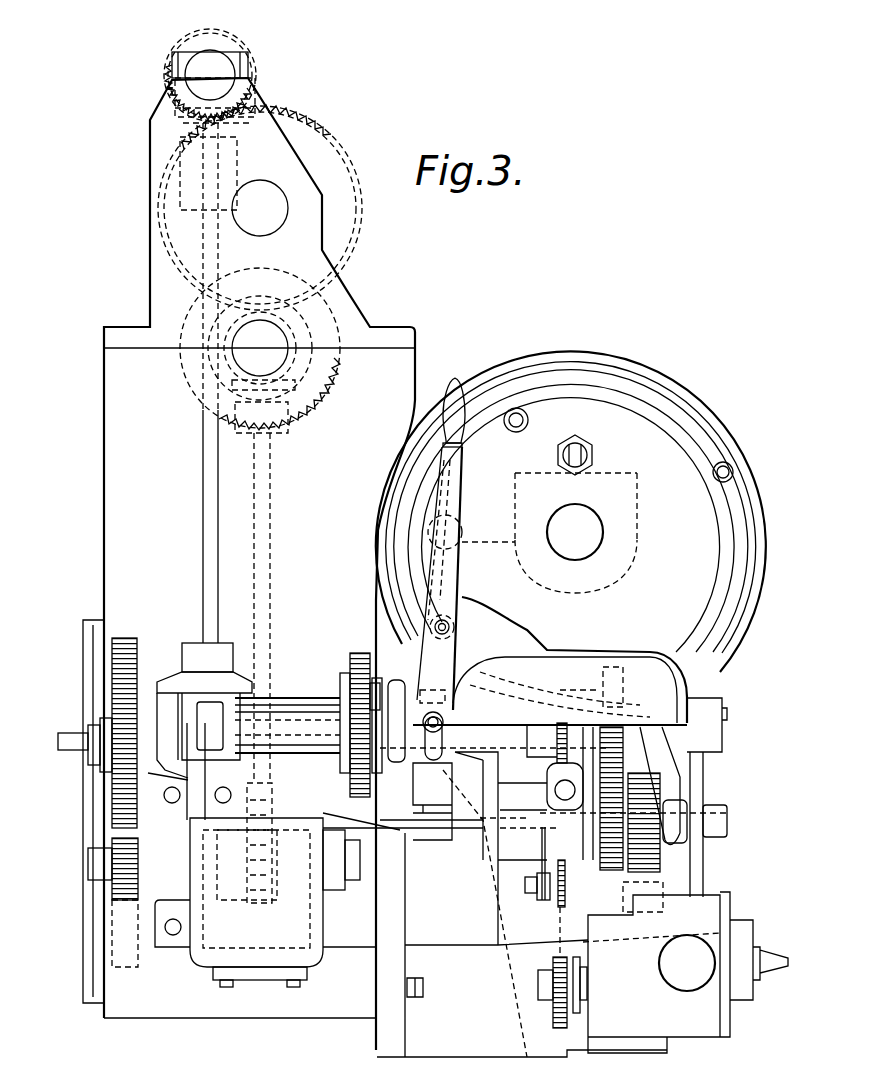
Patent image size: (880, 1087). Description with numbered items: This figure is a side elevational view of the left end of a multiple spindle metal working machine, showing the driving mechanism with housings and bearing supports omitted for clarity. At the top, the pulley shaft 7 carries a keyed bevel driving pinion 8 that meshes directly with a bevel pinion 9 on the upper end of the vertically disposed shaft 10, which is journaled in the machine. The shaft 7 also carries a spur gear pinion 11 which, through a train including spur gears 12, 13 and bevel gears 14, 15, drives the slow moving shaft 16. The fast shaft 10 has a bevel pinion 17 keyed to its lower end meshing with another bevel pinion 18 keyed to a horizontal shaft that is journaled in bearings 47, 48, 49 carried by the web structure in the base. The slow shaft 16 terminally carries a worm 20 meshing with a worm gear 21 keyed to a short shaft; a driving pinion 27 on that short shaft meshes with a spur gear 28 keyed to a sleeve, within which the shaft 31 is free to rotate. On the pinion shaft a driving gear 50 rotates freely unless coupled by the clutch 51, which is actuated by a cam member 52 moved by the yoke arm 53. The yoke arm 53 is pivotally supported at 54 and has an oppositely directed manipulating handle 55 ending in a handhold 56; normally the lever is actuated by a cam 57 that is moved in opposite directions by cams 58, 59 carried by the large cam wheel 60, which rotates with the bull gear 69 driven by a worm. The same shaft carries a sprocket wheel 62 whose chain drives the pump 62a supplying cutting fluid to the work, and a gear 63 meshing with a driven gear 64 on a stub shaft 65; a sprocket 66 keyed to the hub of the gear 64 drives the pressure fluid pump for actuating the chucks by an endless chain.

The shaft 7 is at (213, 70).
The bevel driving pinion 8 is at (237, 44).
The bevel pinion 9 is at (177, 118).
The vertically disposed shaft 10 is at (205, 480).
The spur gear pinion 11 is at (240, 85).
The spur gear 12 is at (323, 137).
The spur gear 13 is at (333, 325).
The bevel gear 14 is at (305, 360).
The bevel gear 15 is at (285, 407).
The shaft 16 is at (293, 520).
The bevel pinion 17 is at (192, 662).
The bevel pinion 18 is at (163, 708).
The worm 20 is at (275, 820).
The worm gear 21 is at (253, 915).
The driving pinion 27 is at (123, 880).
The spur gear 28 is at (123, 645).
The shaft 31 is at (68, 738).
The bearing 47 is at (232, 738).
The bearing 48 is at (475, 735).
The bearing 49 is at (712, 737).
The driving gear 50 is at (352, 792).
The clutch 51 is at (397, 753).
The cam member 52 is at (410, 753).
The yoke arm 53 is at (432, 665).
The pivot 54 is at (437, 627).
The manipulating handle 55 is at (445, 495).
The handhold 56 is at (456, 395).
The cam 57 is at (445, 537).
The cam 58 is at (516, 432).
The cam 59 is at (726, 462).
The cam wheel 60 is at (610, 385).
The sprocket wheel 62 is at (560, 765).
The pump 62a is at (657, 1013).
The gear 63 is at (623, 760).
The driven gear 64 is at (613, 853).
The stub shaft 65 is at (588, 822).
The sprocket 66 is at (650, 857).
The bull gear 69 is at (695, 402).